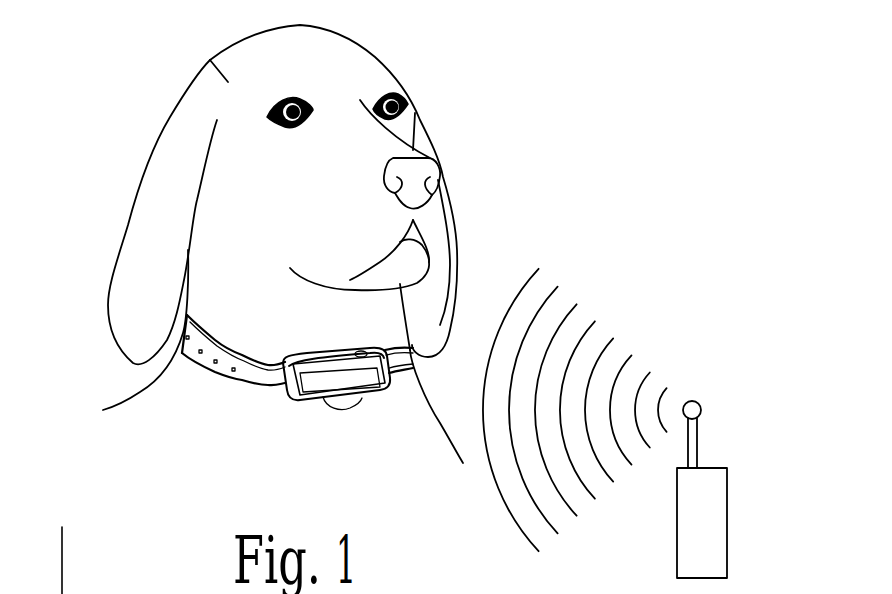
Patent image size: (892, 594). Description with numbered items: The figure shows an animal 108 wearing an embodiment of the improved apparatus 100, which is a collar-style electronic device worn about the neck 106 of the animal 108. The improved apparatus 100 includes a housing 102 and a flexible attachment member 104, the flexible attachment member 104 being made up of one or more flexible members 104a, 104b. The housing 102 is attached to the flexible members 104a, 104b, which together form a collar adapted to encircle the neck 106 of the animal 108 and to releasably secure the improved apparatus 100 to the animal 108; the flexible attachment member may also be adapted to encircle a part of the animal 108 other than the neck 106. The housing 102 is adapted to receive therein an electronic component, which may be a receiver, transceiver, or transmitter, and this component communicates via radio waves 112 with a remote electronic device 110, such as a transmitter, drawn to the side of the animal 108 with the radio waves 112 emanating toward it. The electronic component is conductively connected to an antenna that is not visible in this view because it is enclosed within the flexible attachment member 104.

The improved apparatus 100 is at (312, 362).
The housing 102 is at (330, 368).
The flexible attachment member 104 is at (312, 344).
The flexible member 104a is at (250, 375).
The flexible member 104b is at (412, 340).
The neck 106 is at (237, 330).
The animal 108 is at (228, 82).
The remote electronic device 110 is at (727, 553).
The radio waves 112 is at (633, 356).